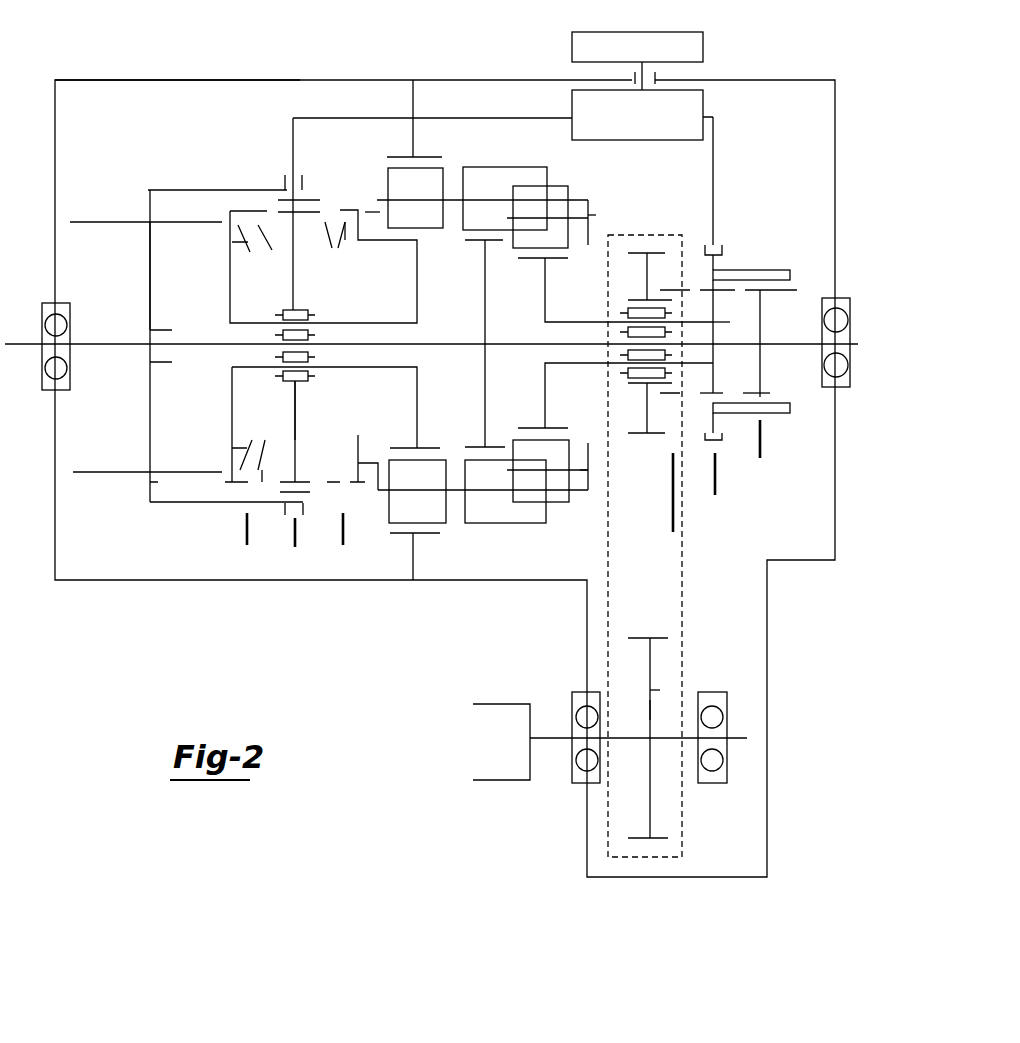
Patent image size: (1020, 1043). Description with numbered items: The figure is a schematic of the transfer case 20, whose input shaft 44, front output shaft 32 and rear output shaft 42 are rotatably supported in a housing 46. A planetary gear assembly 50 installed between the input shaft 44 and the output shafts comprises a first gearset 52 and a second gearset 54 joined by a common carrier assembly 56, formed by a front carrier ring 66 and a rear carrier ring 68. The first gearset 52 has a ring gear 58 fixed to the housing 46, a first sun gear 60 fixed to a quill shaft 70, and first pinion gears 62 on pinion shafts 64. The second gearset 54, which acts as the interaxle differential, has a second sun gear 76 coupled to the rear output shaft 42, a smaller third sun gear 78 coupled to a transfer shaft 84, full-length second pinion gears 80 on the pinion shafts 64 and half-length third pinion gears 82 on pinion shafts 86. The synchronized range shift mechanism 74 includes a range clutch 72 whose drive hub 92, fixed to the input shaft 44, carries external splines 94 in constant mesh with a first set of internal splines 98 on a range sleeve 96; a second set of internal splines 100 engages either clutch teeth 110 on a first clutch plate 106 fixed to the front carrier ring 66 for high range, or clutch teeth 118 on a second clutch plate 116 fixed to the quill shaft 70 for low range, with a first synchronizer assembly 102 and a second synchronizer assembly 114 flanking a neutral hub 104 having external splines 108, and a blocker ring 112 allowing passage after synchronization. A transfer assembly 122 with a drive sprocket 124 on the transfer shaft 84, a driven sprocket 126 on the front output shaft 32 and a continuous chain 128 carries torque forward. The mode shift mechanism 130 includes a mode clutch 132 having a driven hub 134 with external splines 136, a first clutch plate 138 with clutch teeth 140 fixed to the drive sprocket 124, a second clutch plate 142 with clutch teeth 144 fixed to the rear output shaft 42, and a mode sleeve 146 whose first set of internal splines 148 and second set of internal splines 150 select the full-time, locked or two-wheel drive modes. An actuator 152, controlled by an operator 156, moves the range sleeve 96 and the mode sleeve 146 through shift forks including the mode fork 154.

The transfer case 20 is at (800, 52).
The front output shaft 32 is at (548, 735).
The rear output shaft 42 is at (857, 350).
The input shaft 44 is at (50, 302).
The housing 46 is at (172, 80).
The planetary gear assembly 50 is at (520, 140).
The first gearset 52 is at (468, 128).
The second gearset 54 is at (550, 172).
The carrier assembly 56 is at (455, 204).
The ring gear 58 is at (428, 533).
The first sun gear 60 is at (417, 415).
The first pinion gears 62 is at (443, 182).
The pinion shaft 64 is at (440, 490).
The front carrier ring 66 is at (378, 490).
The rear carrier ring 68 is at (590, 216).
The quill shaft 70 is at (372, 323).
The range clutch 72 is at (205, 515).
The synchronized range shift mechanism 74 is at (320, 436).
The second sun gear 76 is at (486, 300).
The third sun gear 78 is at (555, 285).
The second pinion gears 80 is at (492, 522).
The third pinion gears 82 is at (556, 503).
The transfer shaft 84 is at (608, 322).
The pinion shaft 86 is at (580, 487).
The drive hub 92 is at (180, 262).
The external splines 94 is at (105, 222).
The range sleeve 96 is at (272, 190).
The first set of internal splines 98 is at (148, 482).
The second set of internal splines 100 is at (310, 482).
The first synchronizer assembly 102 is at (335, 441).
The neutral hub 104 is at (295, 428).
The first clutch plate 106 is at (358, 242).
The external splines 108 is at (318, 200).
The clutch teeth 110 is at (366, 212).
The blocker ring 112 is at (330, 235).
The second synchronizer assembly 114 is at (268, 255).
The second clutch plate 116 is at (232, 425).
The clutch teeth 118 is at (228, 211).
The transfer assembly 122 is at (692, 603).
The drive sprocket 124 is at (647, 252).
The driven sprocket 126 is at (650, 690).
The continuous chain 128 is at (672, 618).
The mode shift mechanism 130 is at (783, 210).
The mode clutch 132 is at (787, 268).
The driven hub 134 is at (739, 328).
The external splines 136 is at (700, 290).
The first clutch plate 138 is at (647, 300).
The clutch teeth 140 is at (680, 290).
The second clutch plate 142 is at (768, 292).
The clutch teeth 144 is at (765, 292).
The mode sleeve 146 is at (745, 270).
The first set of internal splines 148 is at (740, 403).
The second set of internal splines 150 is at (294, 162).
The actuator 152 is at (704, 112).
The mode fork 154 is at (715, 162).
The operator 156 is at (704, 42).